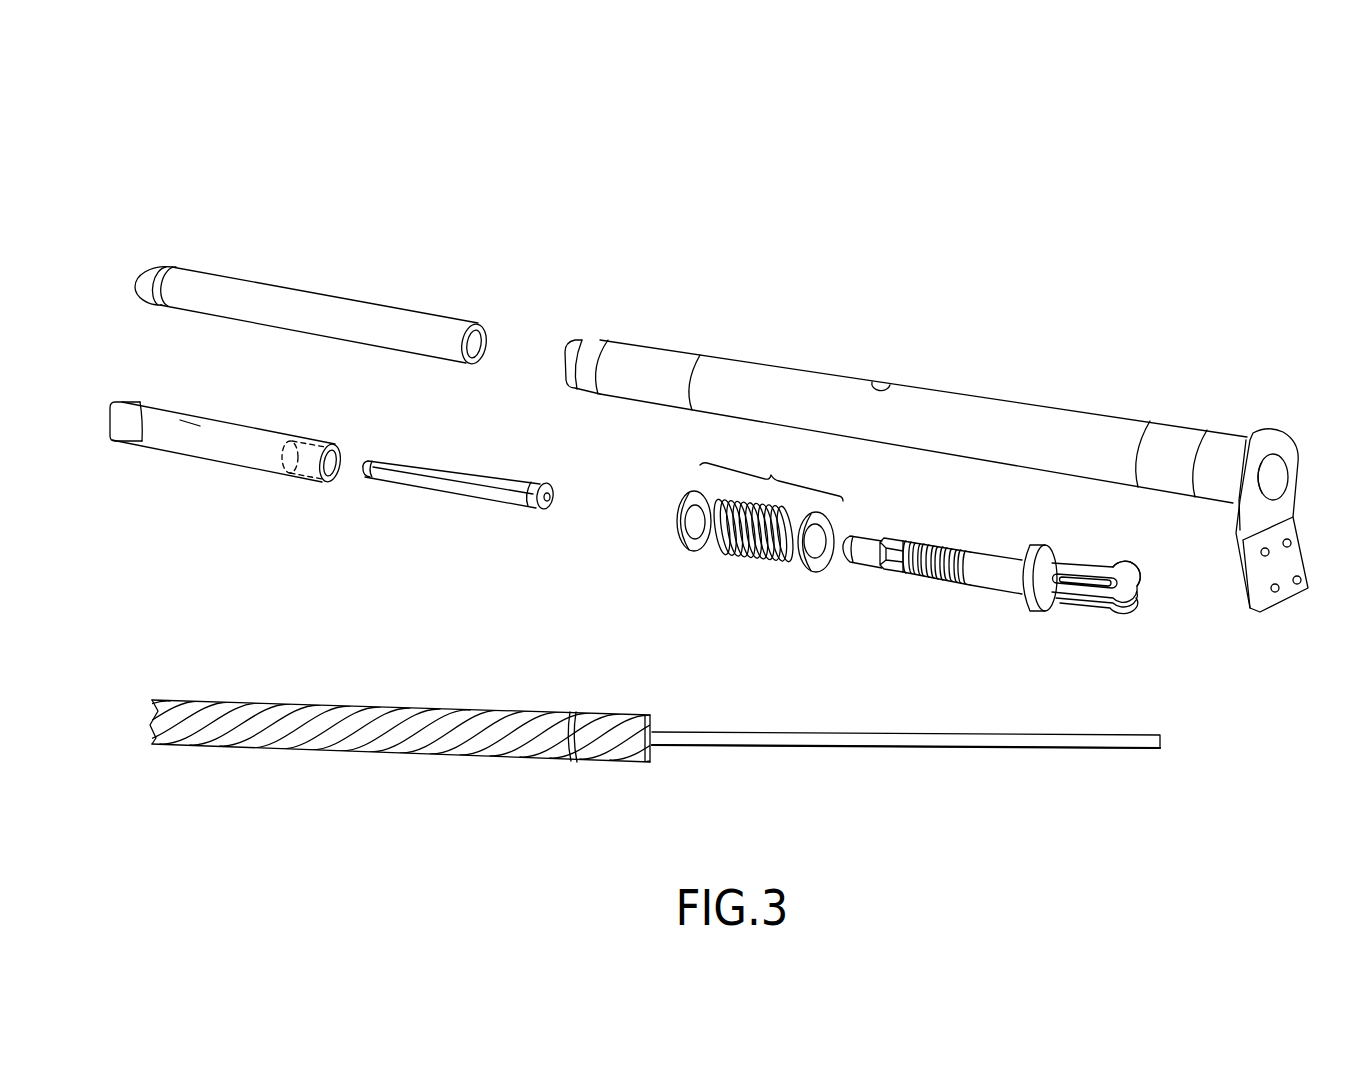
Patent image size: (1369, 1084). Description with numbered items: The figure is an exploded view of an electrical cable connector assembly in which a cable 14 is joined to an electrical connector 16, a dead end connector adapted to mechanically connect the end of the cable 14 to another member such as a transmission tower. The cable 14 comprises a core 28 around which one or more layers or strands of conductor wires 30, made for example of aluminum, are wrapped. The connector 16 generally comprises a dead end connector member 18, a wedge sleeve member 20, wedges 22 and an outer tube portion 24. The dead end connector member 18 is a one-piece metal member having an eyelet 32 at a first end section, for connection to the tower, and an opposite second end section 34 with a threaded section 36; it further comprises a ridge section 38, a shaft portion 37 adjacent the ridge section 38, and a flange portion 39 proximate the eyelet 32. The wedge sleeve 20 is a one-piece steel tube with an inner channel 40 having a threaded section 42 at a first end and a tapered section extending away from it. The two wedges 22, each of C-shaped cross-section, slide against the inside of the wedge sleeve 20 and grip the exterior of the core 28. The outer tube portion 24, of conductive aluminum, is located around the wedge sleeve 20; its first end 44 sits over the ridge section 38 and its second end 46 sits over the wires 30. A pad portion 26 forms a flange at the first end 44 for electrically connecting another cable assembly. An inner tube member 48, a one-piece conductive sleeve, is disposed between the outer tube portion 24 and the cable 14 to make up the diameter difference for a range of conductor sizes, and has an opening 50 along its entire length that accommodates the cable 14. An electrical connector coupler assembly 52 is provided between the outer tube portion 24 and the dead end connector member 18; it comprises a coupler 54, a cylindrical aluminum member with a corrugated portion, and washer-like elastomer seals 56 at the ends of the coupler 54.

The cable 14 is at (510, 765).
The electrical connector 16 is at (327, 165).
The dead end connector member 18 is at (1103, 598).
The wedge sleeve member 20 is at (175, 452).
The wedges 22 is at (450, 492).
The outer tube portion 24 is at (964, 402).
The pad portion 26 is at (1300, 560).
The core 28 is at (740, 748).
The conductor wires 30 is at (438, 712).
The eyelet 32 is at (1148, 580).
The second end section 34 is at (875, 565).
The threaded section 36 is at (862, 565).
The shaft portion 37 is at (995, 560).
The ridge section 38 is at (955, 578).
The flange portion 39 is at (1030, 600).
The inner channel 40 is at (178, 424).
The threaded section 42 is at (312, 448).
The first end 44 is at (1180, 428).
The second end 46 is at (625, 343).
The inner tube member 48 is at (178, 268).
The opening 50 is at (486, 332).
The electrical connector coupler assembly 52 is at (749, 525).
The coupler 54 is at (745, 553).
The seals 56 is at (680, 540).